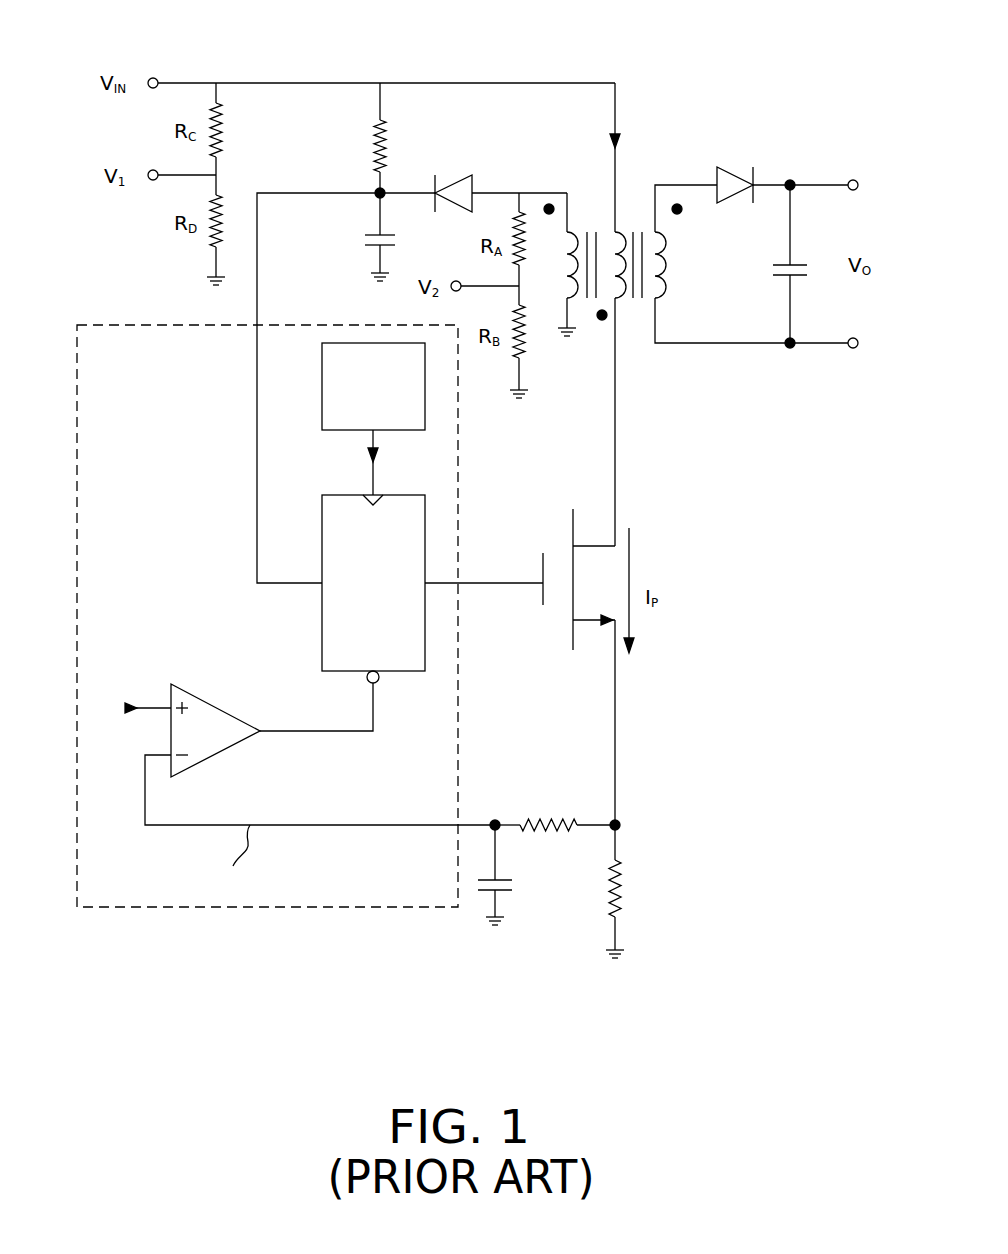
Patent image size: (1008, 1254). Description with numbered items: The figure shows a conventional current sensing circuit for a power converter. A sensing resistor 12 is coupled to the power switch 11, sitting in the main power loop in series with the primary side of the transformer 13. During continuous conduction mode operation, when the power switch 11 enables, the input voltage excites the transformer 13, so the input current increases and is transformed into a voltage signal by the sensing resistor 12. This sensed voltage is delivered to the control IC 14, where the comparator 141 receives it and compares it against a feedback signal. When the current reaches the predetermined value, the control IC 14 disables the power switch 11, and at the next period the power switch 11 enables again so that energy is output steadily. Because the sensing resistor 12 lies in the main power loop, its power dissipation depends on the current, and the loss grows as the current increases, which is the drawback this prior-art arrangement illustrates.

The power switch 11 is at (545, 515).
The sensing resistor 12 is at (603, 893).
The transformer 13 is at (640, 175).
The control IC 14 is at (309, 616).
The comparator 141 is at (193, 697).